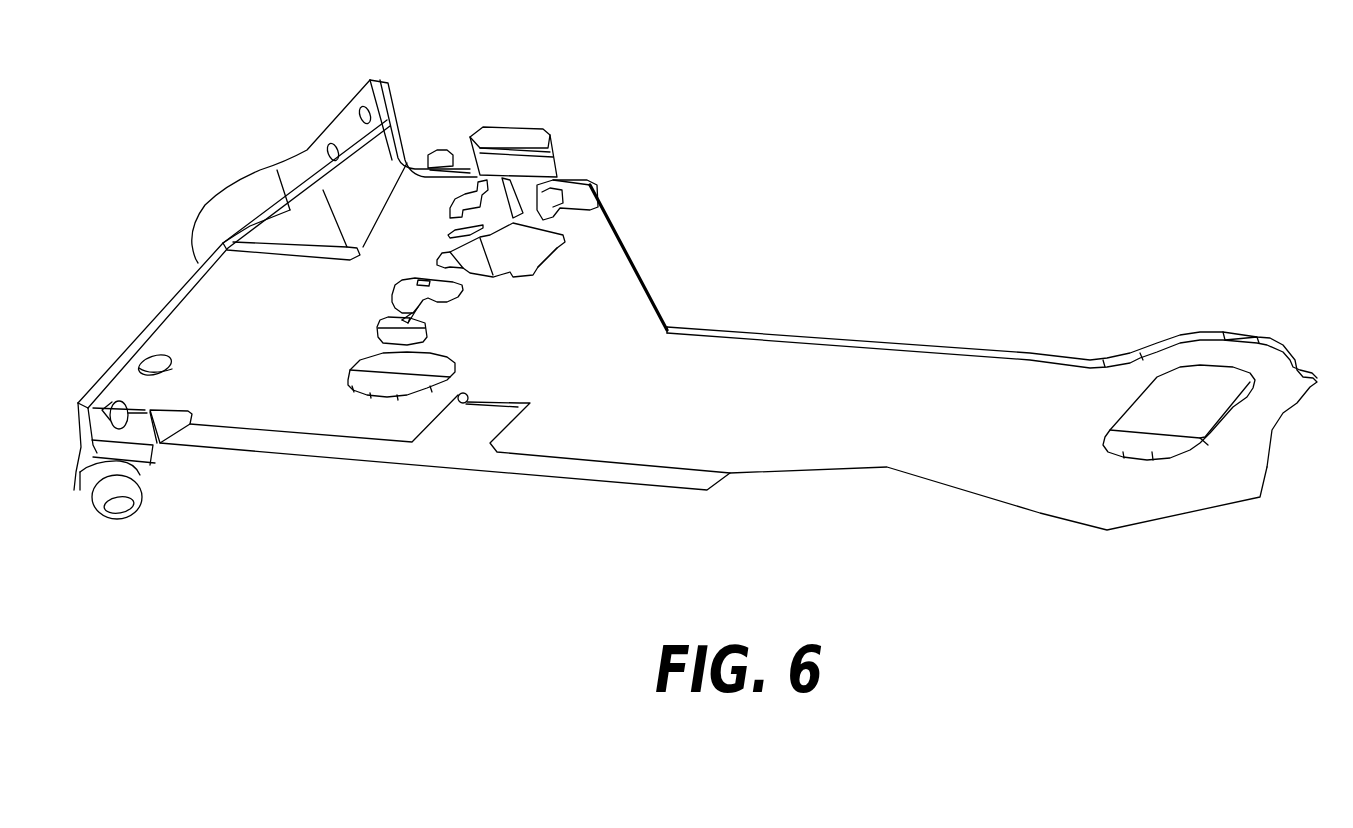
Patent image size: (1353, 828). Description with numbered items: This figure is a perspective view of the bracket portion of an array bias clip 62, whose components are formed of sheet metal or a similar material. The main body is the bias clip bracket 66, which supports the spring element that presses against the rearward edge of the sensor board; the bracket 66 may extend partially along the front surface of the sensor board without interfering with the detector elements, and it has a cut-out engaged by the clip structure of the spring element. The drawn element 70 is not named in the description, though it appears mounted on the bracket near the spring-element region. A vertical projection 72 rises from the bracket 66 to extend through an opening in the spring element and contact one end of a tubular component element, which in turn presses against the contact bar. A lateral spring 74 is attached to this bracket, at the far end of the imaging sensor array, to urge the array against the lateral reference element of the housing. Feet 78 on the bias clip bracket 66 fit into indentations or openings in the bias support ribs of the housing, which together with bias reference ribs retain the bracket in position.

The array bias clip 62 is at (733, 217).
The bracket 66 is at (982, 475).
The clip 70 is at (552, 220).
The vertical projection 72 is at (438, 158).
The lateral spring 74 is at (226, 205).
The feet 78 is at (138, 487).